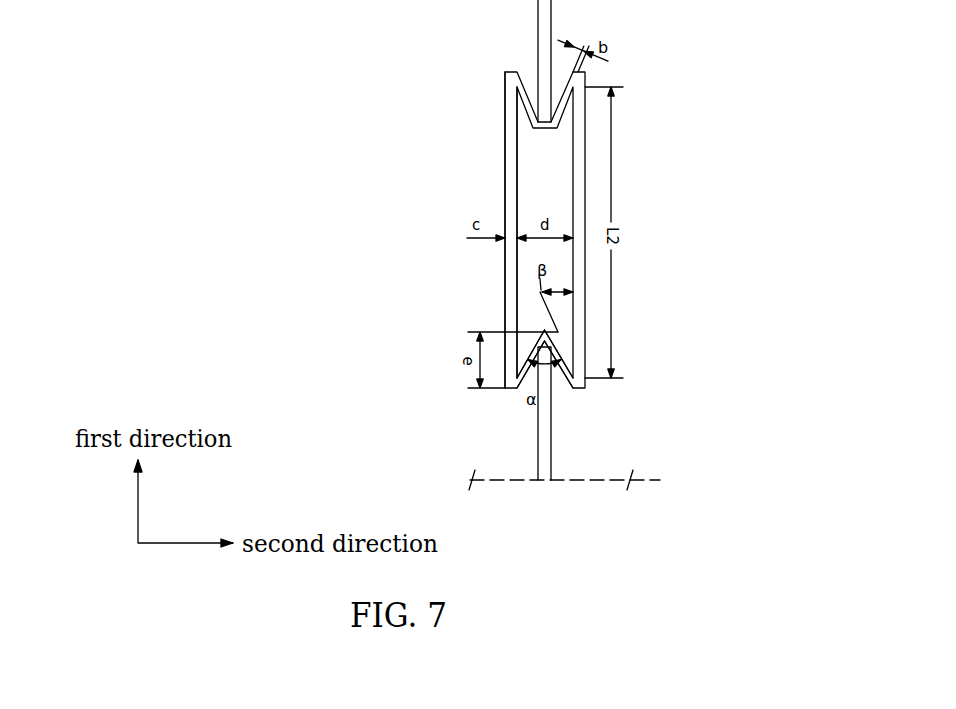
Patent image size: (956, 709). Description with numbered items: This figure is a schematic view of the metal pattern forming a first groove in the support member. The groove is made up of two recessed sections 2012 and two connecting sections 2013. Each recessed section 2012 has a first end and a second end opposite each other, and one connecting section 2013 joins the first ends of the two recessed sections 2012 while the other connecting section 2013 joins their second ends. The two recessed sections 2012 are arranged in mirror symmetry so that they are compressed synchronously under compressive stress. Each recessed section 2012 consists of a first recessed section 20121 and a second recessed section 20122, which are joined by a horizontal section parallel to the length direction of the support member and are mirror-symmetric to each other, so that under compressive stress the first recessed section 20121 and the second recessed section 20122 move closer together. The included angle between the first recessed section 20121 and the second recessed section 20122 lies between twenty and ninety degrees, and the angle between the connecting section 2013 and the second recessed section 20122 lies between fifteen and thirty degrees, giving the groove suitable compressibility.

The recessed section 2012 is at (517, 105).
The connecting section 2013 is at (517, 196).
The first recessed section 20121 is at (537, 350).
The second recessed section 20122 is at (567, 380).